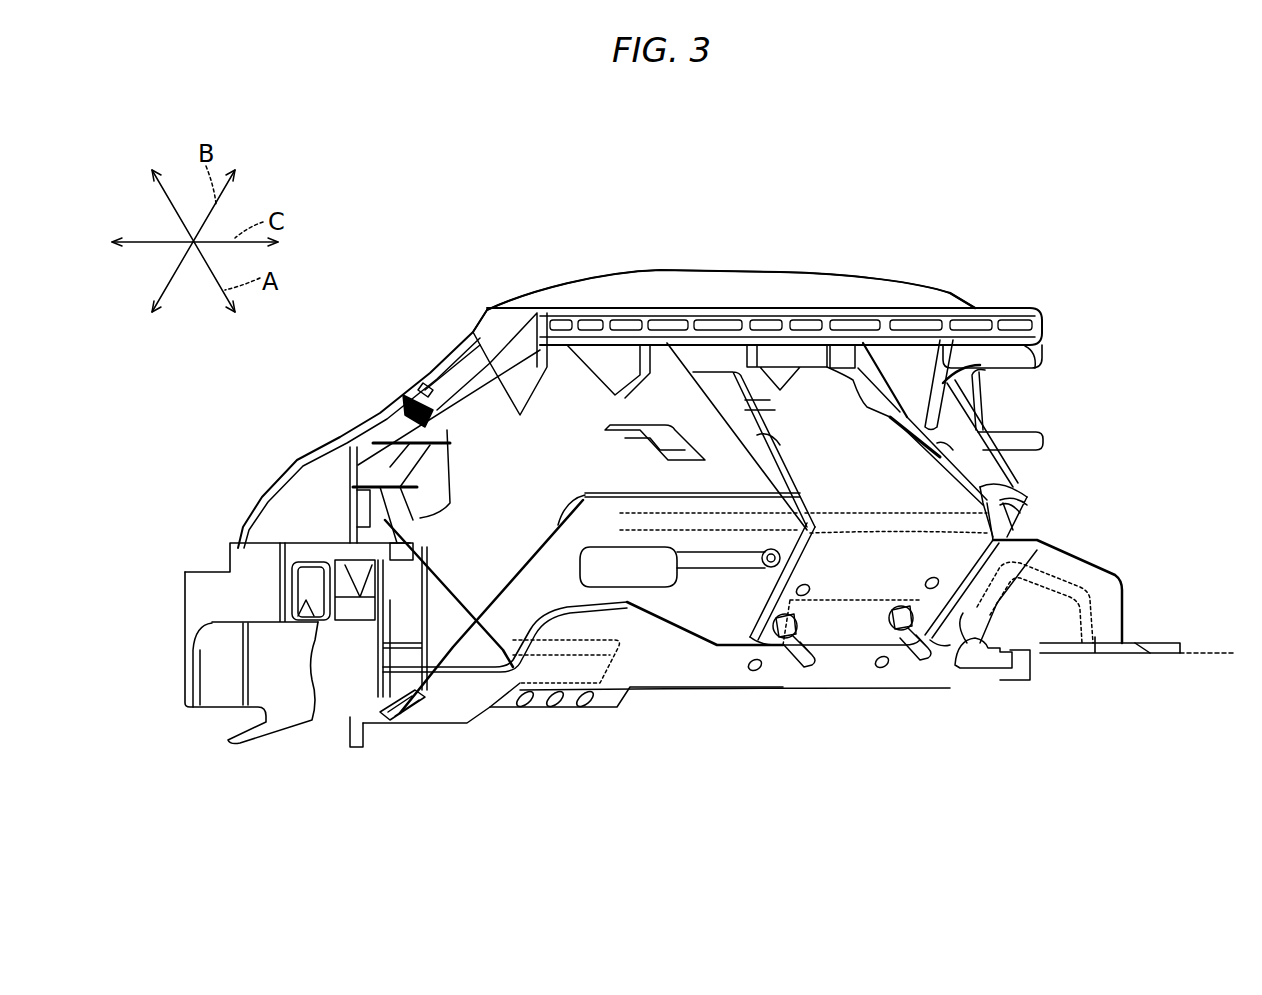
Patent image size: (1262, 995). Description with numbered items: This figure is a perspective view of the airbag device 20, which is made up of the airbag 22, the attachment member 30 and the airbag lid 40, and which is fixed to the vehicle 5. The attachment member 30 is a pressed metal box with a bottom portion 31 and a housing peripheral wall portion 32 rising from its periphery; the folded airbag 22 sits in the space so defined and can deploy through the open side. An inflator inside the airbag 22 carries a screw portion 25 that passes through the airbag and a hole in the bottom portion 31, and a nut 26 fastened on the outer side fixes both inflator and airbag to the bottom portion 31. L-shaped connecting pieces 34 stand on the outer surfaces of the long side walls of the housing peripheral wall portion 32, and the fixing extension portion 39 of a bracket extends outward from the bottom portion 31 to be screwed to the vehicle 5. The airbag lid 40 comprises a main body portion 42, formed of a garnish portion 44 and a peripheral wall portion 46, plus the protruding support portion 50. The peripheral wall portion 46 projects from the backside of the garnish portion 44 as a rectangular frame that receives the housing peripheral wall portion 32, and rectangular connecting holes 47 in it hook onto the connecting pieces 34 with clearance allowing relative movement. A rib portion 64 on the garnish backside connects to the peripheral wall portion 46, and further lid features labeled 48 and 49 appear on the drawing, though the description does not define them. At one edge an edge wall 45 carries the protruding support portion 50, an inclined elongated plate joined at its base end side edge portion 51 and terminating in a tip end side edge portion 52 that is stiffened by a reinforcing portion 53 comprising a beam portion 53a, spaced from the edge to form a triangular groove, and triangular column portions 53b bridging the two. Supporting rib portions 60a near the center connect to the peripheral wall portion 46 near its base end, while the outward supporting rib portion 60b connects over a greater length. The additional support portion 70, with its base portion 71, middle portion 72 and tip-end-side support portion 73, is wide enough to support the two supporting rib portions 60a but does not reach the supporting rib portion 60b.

The vehicle 5 is at (1195, 645).
The airbag device 20 is at (930, 244).
The airbag 22 is at (633, 600).
The screw portion 25 is at (806, 660).
The nut 26 is at (770, 640).
The attachment member 30 is at (1022, 523).
The bottom portion 31 is at (705, 620).
The housing peripheral wall portion 32 is at (518, 606).
The connecting piece 34 is at (630, 440).
The fixing extension portion 39 is at (1105, 565).
The airbag lid 40 is at (688, 262).
The main body portion 42 is at (568, 283).
The garnish portion 44 is at (760, 270).
The edge wall 45 is at (820, 283).
The peripheral wall portion 46 is at (440, 390).
The connecting hole 47 is at (617, 432).
The lower housing 48 is at (213, 563).
The rear tab 49 is at (1032, 432).
The protruding support portion 50 is at (872, 308).
The base end side edge portion 51 is at (506, 303).
The tip end side edge portion 52 is at (968, 305).
The reinforcing portion 53 is at (1035, 358).
The beam portion 53a is at (992, 368).
The column portion 53b is at (718, 321).
The supporting rib portion 60a is at (790, 378).
The supporting rib portion 60b is at (598, 385).
The rib portion 64 is at (460, 427).
The additional support portion 70 is at (980, 650).
The base portion 71 is at (765, 602).
The middle portion 72 is at (866, 593).
The tip-end-side support portion 73 is at (704, 386).